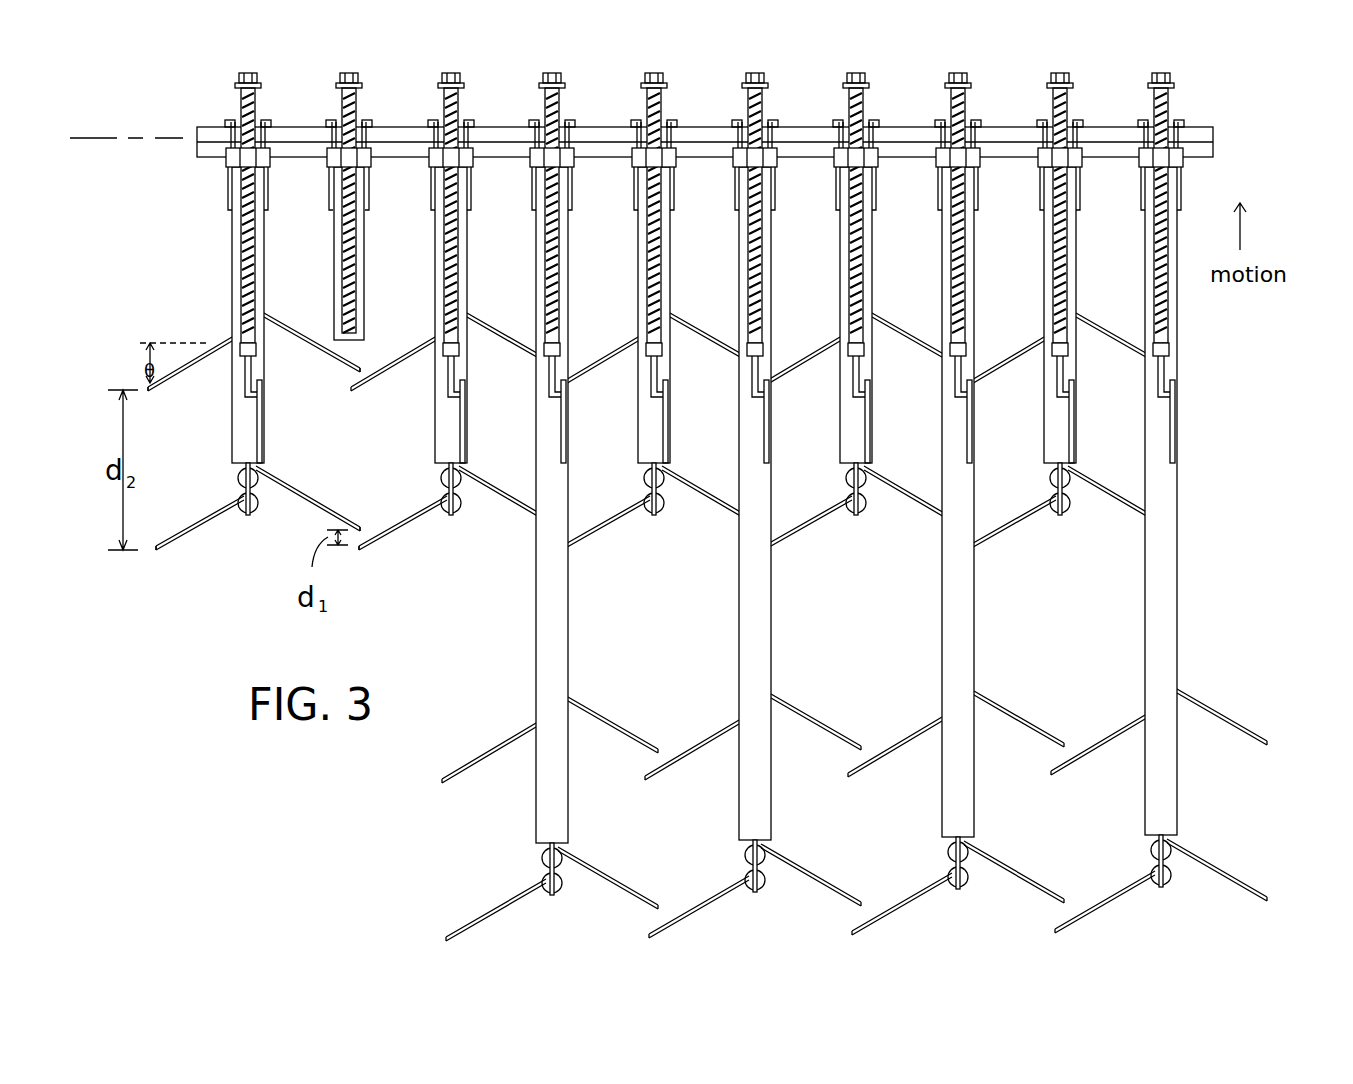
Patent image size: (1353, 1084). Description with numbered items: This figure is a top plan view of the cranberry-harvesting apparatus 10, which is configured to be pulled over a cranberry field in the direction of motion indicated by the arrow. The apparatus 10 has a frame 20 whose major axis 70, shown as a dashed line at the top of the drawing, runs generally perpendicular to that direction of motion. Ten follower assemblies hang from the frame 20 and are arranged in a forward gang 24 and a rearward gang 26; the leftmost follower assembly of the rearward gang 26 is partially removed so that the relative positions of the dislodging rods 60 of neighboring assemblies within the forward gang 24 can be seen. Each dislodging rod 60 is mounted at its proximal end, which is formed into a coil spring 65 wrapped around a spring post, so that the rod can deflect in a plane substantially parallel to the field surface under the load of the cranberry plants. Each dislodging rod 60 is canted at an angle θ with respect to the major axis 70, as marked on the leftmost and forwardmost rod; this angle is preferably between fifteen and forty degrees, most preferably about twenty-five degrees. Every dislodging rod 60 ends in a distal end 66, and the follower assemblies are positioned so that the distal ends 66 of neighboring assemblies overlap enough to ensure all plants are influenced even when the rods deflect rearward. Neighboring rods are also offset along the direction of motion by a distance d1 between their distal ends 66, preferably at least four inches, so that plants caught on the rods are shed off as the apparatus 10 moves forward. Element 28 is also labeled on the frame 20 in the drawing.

The cranberry-harvesting apparatus 10 is at (1233, 562).
The frame 20 is at (402, 138).
The forward gang 24 is at (1221, 415).
The rearward gang 26 is at (1246, 784).
The clamp bracket 28 is at (507, 140).
The dislodging rod 60 is at (308, 493).
The coil spring 65 is at (257, 515).
The distal end 66 is at (158, 560).
The major axis 70 is at (106, 136).